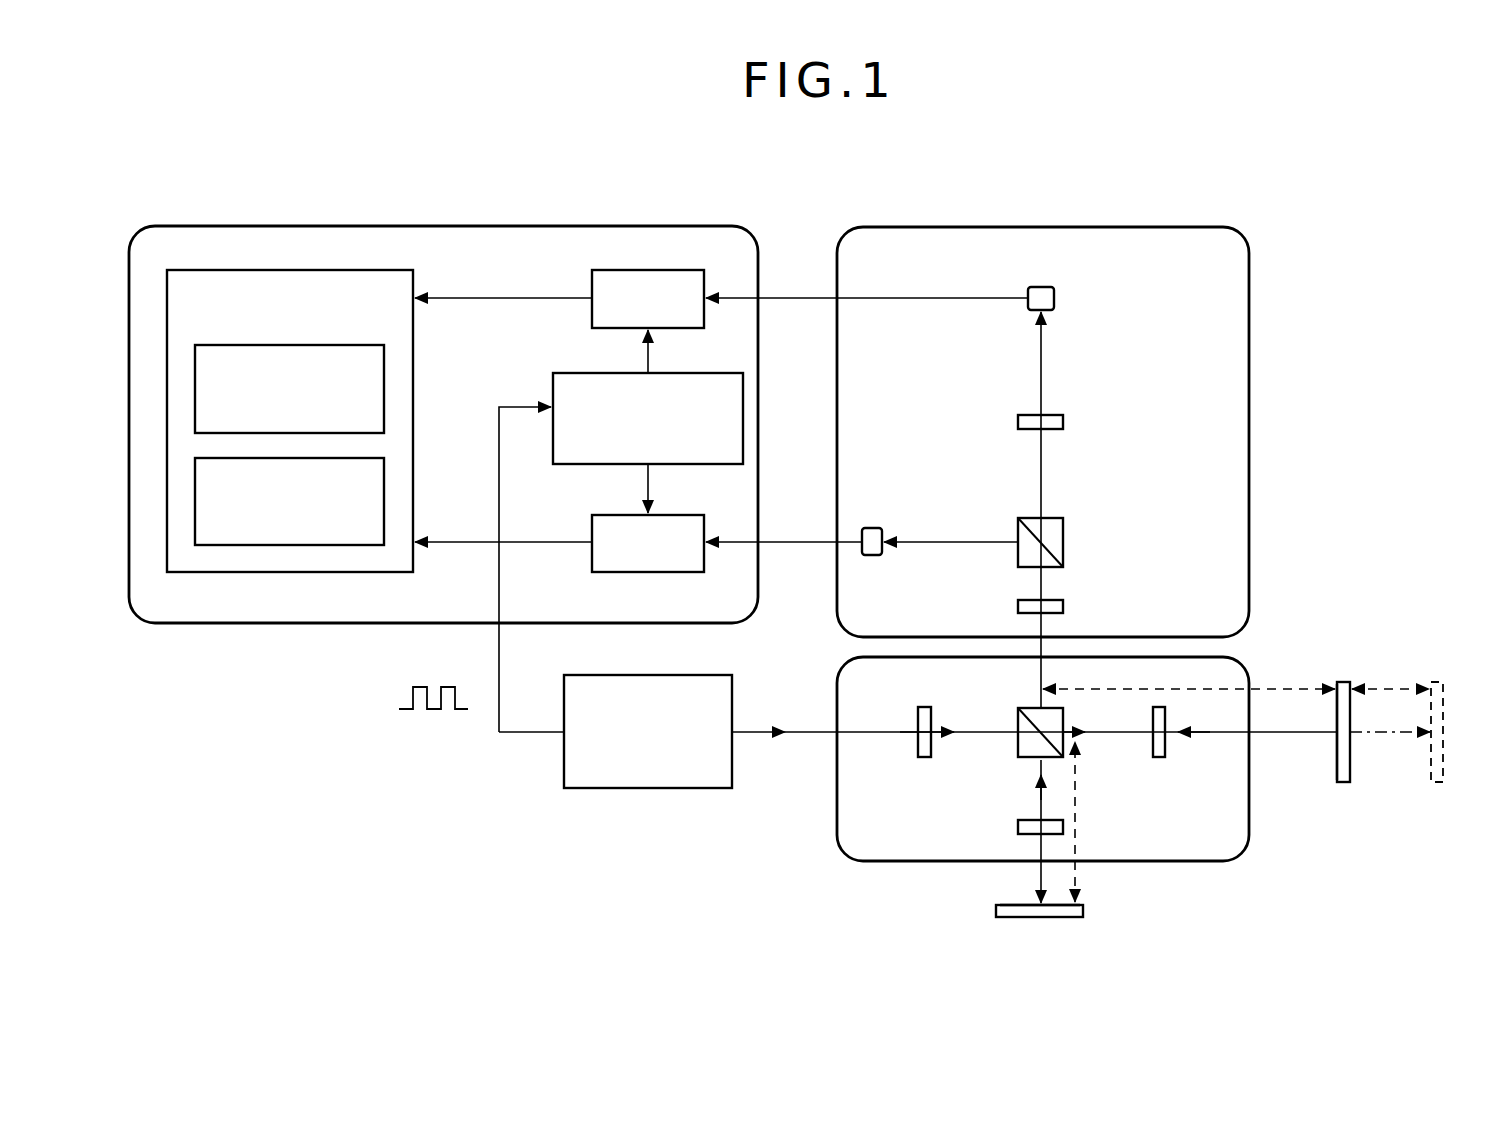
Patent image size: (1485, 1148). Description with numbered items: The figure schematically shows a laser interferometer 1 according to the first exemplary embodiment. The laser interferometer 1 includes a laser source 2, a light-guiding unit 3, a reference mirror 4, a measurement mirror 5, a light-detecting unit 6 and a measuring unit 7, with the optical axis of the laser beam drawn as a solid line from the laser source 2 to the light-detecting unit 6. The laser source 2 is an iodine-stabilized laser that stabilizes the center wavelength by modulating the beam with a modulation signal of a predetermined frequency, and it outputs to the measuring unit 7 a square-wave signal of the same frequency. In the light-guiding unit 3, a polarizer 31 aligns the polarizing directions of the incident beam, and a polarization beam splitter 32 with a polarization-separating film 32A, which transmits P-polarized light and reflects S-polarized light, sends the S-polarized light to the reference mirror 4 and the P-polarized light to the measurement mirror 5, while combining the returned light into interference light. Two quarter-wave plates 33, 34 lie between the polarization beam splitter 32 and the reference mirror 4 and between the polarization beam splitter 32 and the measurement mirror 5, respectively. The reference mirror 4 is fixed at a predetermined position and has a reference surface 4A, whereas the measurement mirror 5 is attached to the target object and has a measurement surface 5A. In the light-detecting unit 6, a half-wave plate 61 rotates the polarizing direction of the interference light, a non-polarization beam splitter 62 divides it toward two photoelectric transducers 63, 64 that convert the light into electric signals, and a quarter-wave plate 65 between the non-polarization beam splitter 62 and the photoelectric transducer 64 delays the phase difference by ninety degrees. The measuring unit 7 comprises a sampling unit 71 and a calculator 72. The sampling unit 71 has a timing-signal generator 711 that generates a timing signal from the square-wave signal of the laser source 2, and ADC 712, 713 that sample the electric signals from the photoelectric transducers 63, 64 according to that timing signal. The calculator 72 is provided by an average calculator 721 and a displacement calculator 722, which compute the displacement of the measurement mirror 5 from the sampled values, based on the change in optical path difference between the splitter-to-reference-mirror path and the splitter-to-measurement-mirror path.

The laser interferometer 1 is at (1382, 238).
The laser source 2 is at (650, 788).
The light-guiding unit 3 is at (837, 828).
The polarizer 31 is at (923, 757).
The polarization beam splitter 32 is at (1009, 730).
The polarization-separating film 32A is at (1033, 710).
The quarter-wave plate 33 is at (1018, 827).
The quarter-wave plate 34 is at (1160, 757).
The reference mirror 4 is at (996, 910).
The reference surface 4A is at (1020, 903).
The measurement mirror 5 is at (1343, 785).
The measurement surface 5A is at (1337, 765).
The light-detecting unit 6 is at (1250, 385).
The half-wave plate 61 is at (1063, 606).
The non-polarization beam splitter 62 is at (1063, 528).
The photoelectric transducer 63 is at (873, 528).
The photoelectric transducer 64 is at (1054, 296).
The quarter-wave plate 65 is at (1063, 421).
The measuring unit 7 is at (663, 226).
The sampling unit 71 is at (718, 272).
The timing-signal generator 711 is at (566, 464).
The ADC 712 is at (592, 558).
The ADC 713 is at (592, 313).
The calculator 72 is at (367, 268).
The average calculator 721 is at (384, 372).
The displacement calculator 722 is at (384, 478).